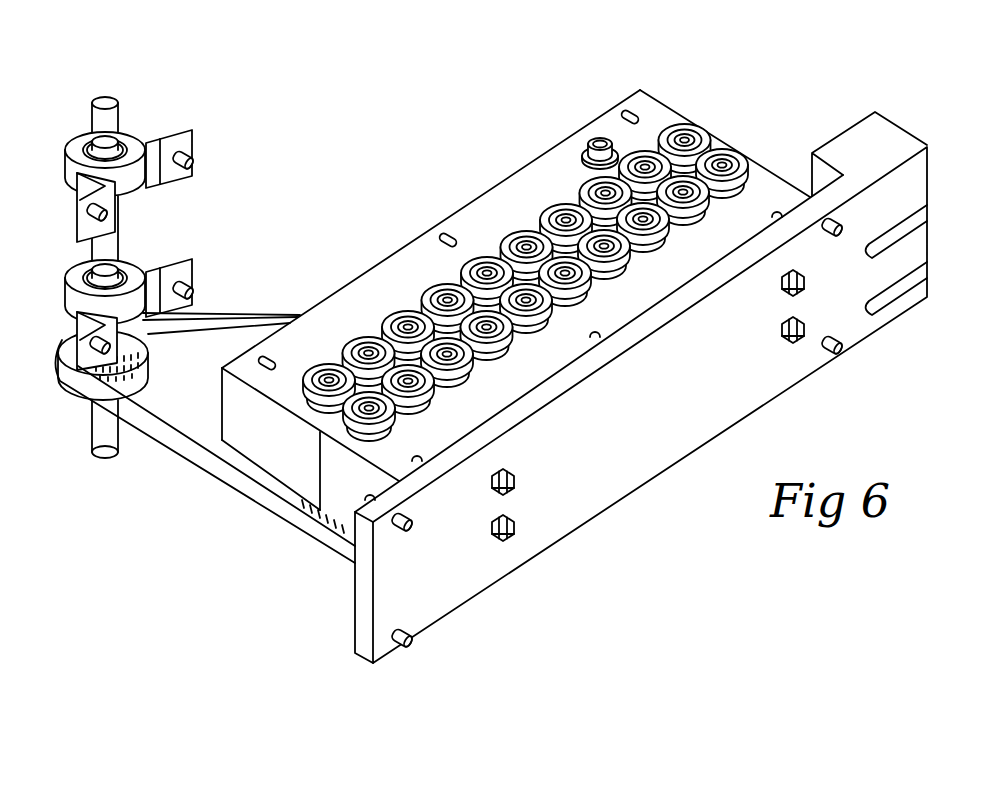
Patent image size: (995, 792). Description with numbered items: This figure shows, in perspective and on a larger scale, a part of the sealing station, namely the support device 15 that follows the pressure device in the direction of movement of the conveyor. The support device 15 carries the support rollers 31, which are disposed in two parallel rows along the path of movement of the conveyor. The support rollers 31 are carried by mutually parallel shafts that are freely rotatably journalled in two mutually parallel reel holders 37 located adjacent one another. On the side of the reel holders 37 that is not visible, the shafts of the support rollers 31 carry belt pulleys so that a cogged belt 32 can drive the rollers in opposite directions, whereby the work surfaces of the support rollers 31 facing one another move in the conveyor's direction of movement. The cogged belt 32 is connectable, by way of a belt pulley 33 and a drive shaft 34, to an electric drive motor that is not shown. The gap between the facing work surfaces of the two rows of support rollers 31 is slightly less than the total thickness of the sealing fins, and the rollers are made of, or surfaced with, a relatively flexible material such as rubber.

The support device 15 is at (368, 95).
The support rollers 31 is at (563, 207).
The cogged belt 32 is at (268, 316).
The belt pulley 33 is at (157, 362).
The drive shaft 34 is at (108, 244).
The reel holders 37 is at (548, 158).